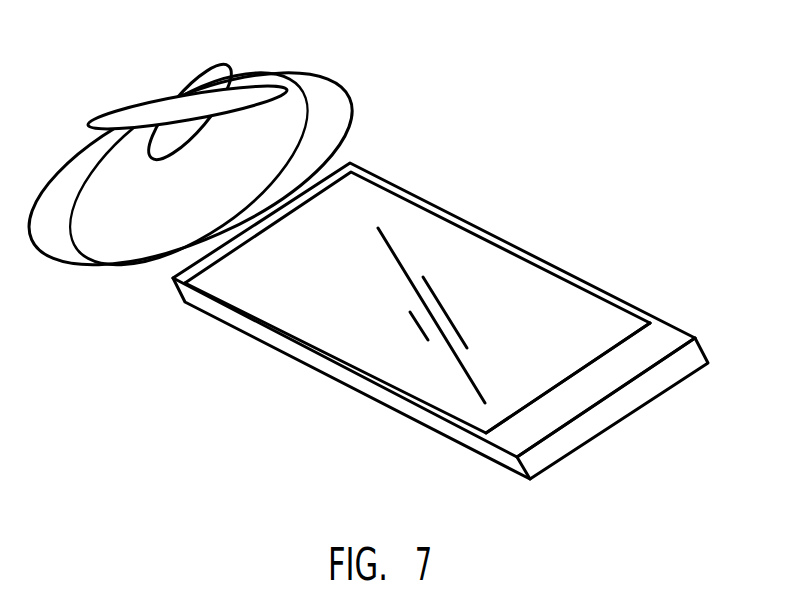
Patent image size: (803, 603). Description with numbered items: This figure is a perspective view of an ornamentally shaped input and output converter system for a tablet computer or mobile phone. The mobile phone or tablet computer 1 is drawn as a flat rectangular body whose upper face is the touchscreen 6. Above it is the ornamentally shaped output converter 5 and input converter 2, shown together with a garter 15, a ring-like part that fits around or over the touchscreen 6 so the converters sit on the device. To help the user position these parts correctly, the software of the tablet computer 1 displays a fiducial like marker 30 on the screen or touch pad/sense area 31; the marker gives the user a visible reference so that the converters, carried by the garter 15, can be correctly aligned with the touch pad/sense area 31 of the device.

The tablet computer 1 is at (479, 447).
The input converter 2 is at (108, 100).
The output converter 5 is at (252, 43).
The touchscreen 6 is at (544, 240).
The garter 15 is at (386, 102).
The fiducial like marker 30 is at (237, 277).
The touch pad/sense area 31 is at (592, 347).